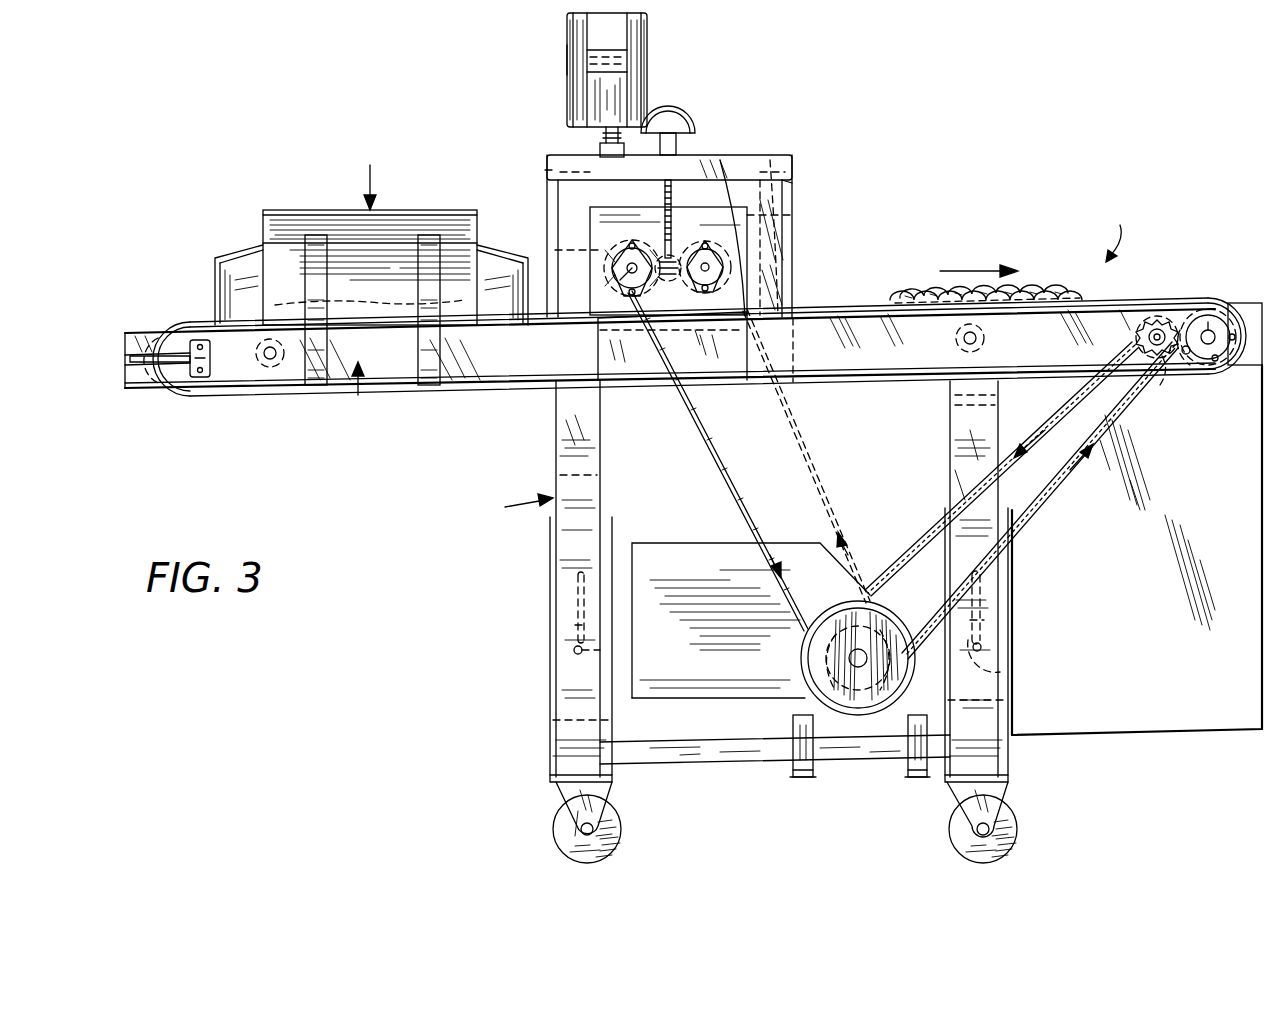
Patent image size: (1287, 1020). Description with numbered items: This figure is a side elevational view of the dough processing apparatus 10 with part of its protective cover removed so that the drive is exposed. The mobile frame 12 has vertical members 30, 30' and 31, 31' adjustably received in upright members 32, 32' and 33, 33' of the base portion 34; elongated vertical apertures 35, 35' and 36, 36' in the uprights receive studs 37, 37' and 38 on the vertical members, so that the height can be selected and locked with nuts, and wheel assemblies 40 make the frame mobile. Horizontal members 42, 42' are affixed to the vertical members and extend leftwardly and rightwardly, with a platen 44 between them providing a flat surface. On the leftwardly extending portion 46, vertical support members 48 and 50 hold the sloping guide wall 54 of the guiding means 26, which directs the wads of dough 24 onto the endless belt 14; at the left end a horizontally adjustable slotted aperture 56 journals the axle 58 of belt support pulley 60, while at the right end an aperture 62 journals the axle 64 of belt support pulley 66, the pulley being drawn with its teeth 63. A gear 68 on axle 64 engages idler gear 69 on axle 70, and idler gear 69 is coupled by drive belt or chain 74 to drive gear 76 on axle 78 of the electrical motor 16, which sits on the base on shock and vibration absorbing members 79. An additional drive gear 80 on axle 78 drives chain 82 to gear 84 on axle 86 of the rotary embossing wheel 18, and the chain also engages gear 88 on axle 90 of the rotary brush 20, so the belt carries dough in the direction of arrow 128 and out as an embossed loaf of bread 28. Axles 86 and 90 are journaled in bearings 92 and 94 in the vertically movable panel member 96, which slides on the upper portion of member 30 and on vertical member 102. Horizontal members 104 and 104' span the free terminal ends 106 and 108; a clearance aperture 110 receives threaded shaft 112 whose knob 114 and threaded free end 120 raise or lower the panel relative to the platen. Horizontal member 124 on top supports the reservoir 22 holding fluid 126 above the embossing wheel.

The dough processing apparatus 10 is at (1106, 230).
The mobile frame 12 is at (514, 507).
The endless belt 14 is at (1195, 298).
The electrical motor 16 is at (905, 602).
The rotary embossing wheel 18 is at (597, 296).
The rotary brush 20 is at (785, 250).
The reservoir 22 is at (638, 38).
The wads of dough 24 is at (383, 300).
The guiding means 26 is at (264, 224).
The embossed loaf of bread 28 is at (903, 292).
The vertical member 30 is at (555, 579).
The vertical member 30' is at (608, 489).
The vertical member 31 is at (938, 579).
The vertical member 31' is at (1002, 405).
The upright member 32 is at (558, 664).
The upright member 32' is at (549, 733).
The upright member 33 is at (1021, 660).
The upright member 33' is at (1014, 705).
The base portion 34 is at (736, 760).
The elongated vertical aperture 35 is at (539, 603).
The elongated vertical aperture 35' is at (542, 618).
The elongated vertical aperture 36 is at (1013, 603).
The elongated vertical aperture 36' is at (1012, 604).
The stud 37 is at (536, 655).
The stud 37' is at (633, 655).
The stud 38 is at (982, 646).
The wheel assembly 40 is at (555, 838).
The horizontal member 42 is at (670, 365).
The horizontal member 42' is at (828, 376).
The platen 44 is at (712, 332).
The leftwardly extending portion 46 is at (360, 396).
The vertical support member 48 is at (318, 386).
The vertical support member 50 is at (430, 386).
The sloping guide wall 54 is at (335, 215).
The horizontally adjustable slotted aperture 56 is at (130, 362).
The axle 58 is at (190, 350).
The belt support pulley 60 is at (181, 388).
The aperture 62 is at (1209, 328).
The sprocket teeth 63 is at (1228, 325).
The axle 64 is at (1205, 366).
The belt support pulley 66 is at (1245, 372).
The gear 68 is at (1170, 370).
The idler gear 69 is at (1163, 316).
The axle 70 is at (1138, 334).
The drive belt or chain 74 is at (1050, 500).
The drive gear 76 is at (1144, 318).
The axle 78 is at (836, 628).
The shock and vibration absorbing member 79 is at (797, 740).
The additional drive gear 80 is at (822, 650).
The drive belt or chain 82 is at (735, 504).
The gear 84 is at (585, 246).
The axle 86 is at (618, 335).
The gear 88 is at (722, 286).
The axle 90 is at (726, 270).
The bearing 92 is at (597, 262).
The bearing 94 is at (793, 212).
The vertically movable panel member 96 is at (736, 168).
The vertical member 102 is at (800, 238).
The horizontal member 104 is at (722, 203).
The horizontal member 104' is at (783, 203).
The free terminal end 106 is at (552, 188).
The free terminal end 108 is at (795, 182).
The clearance aperture 110 is at (660, 150).
The threaded shaft 112 is at (664, 195).
The knob 114 is at (665, 112).
The free end 120 is at (682, 237).
The horizontal member 124 is at (600, 152).
The fluid 126 is at (570, 52).
The arrow 128 is at (973, 270).